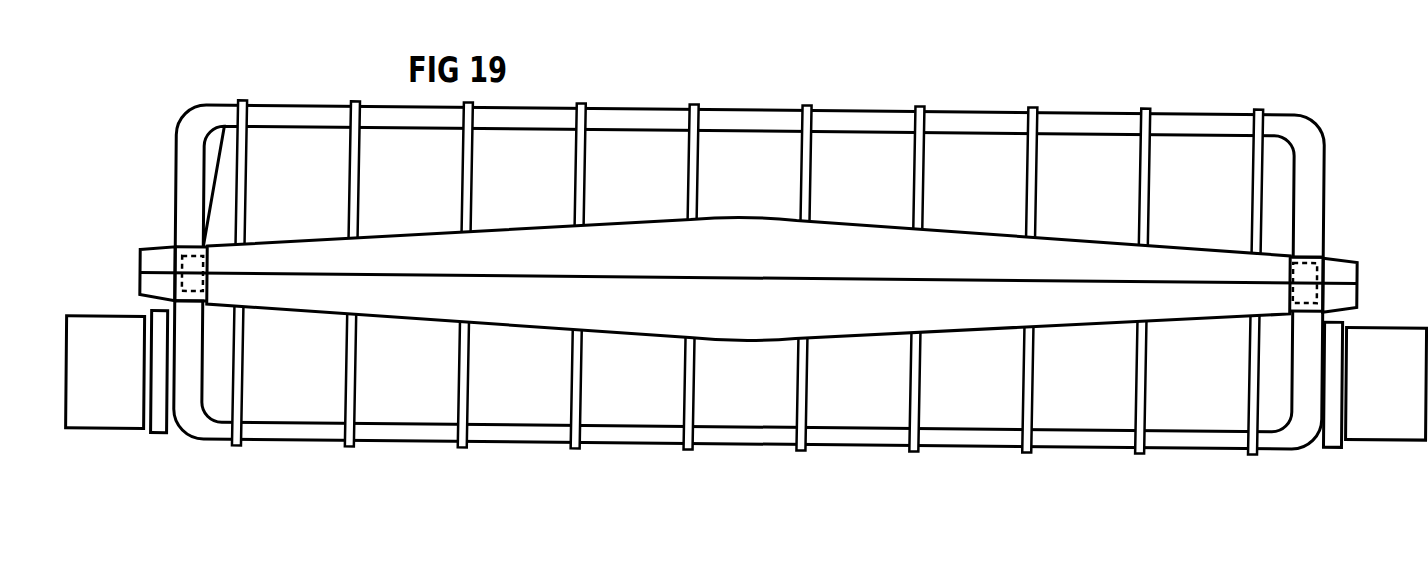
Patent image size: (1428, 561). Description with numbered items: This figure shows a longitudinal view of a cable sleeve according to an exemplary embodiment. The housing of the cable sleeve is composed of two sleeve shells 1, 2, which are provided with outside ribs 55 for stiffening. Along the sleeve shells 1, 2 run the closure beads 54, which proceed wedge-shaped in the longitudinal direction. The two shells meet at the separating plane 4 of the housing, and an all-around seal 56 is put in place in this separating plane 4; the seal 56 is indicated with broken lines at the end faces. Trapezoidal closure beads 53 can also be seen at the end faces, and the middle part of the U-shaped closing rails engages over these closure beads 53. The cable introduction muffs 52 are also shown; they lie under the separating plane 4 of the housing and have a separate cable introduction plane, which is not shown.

The sleeve shell 1 is at (627, 153).
The sleeve shell 2 is at (640, 402).
The separating plane 4 is at (967, 283).
The cable introduction muff 52 is at (103, 405).
The trapezoidal closure bead 53 is at (160, 257).
The closure bead 54 is at (418, 295).
The outside rib 55 is at (926, 125).
The all-around seal 56 is at (1305, 253).